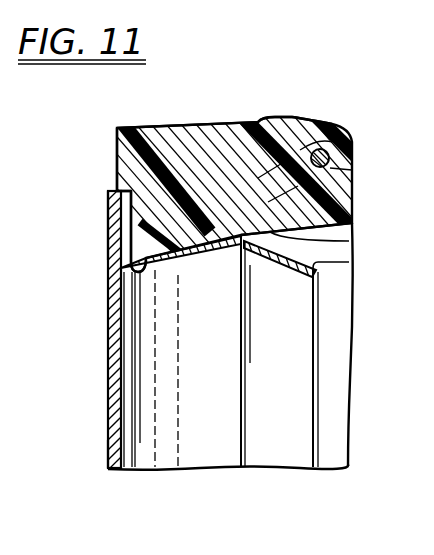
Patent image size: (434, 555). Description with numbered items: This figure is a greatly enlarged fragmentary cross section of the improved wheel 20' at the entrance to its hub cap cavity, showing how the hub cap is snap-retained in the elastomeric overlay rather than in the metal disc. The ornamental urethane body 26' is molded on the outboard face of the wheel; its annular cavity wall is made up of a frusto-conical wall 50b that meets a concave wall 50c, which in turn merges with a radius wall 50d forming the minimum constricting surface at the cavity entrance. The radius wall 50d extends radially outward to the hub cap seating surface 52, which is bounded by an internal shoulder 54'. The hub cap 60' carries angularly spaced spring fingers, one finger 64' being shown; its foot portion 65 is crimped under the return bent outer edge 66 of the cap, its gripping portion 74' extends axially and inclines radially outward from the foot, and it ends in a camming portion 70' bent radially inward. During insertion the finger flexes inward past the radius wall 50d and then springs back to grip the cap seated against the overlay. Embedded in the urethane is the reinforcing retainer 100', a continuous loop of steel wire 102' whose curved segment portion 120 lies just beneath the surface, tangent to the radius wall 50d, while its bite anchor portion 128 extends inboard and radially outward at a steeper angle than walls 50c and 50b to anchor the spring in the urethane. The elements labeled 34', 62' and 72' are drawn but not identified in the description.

The wheel 20' is at (237, 175).
The ornamental elastomeric urethane body 26' is at (190, 131).
The side skirt 34' is at (82, 159).
The hub cap seating surface 52 is at (145, 197).
The internal shoulder 54' is at (79, 194).
The hub cap 60' is at (81, 328).
The lower edge of side wall 62' is at (75, 450).
The spring finger 64' is at (358, 367).
The foot portion 65 is at (108, 234).
The return bent outer edge 66 is at (127, 192).
The camming portion 70' is at (359, 301).
The inner sleeve wall 72' is at (284, 348).
The gripping portion 74' is at (228, 484).
The hub cap retention reinforcing retainer 100' is at (337, 122).
The steel wire loop 102' is at (358, 137).
The curved segment portion 120 is at (168, 266).
The bite anchor portion 128 is at (350, 170).
The frusto-conical wall 50b is at (352, 223).
The concave wall 50c is at (349, 242).
The radius wall 50d is at (112, 263).